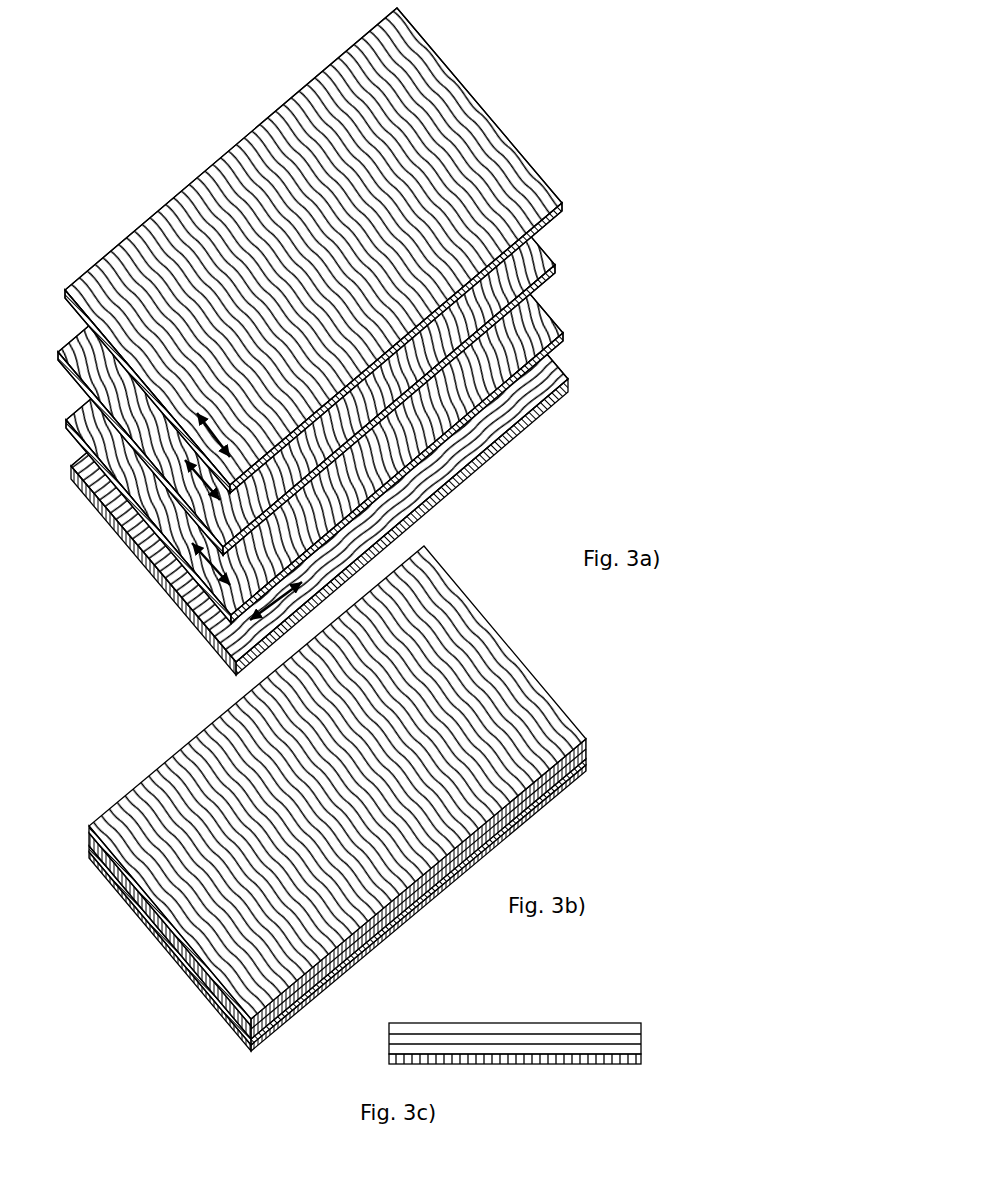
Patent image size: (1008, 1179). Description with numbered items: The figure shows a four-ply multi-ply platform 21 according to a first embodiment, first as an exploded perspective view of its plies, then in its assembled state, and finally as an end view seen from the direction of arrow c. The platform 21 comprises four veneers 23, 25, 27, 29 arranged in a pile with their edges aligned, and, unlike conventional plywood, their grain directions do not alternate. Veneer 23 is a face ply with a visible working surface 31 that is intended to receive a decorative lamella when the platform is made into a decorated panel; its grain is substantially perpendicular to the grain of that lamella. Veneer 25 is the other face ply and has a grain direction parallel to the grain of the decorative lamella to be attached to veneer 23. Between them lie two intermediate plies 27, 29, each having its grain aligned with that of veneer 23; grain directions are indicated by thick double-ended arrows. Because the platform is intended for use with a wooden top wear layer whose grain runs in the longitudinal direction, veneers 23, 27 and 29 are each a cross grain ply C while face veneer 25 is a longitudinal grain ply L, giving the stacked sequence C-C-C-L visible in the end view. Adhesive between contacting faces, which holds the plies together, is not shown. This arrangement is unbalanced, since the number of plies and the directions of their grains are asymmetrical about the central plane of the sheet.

In FIG. 3A, the multi-ply platform 21 is at (359, 341).
In FIG. 3B, the multi-ply platform 21 is at (473, 702).
In FIG. 3A, the face ply veneer 23 is at (350, 250).
In FIG. 3A, the face ply veneer 25 is at (550, 378).
In FIG. 3A, the intermediate ply 27 is at (535, 262).
In FIG. 3A, the intermediate ply 29 is at (537, 327).
In FIG. 3A, the visible working surface 31 is at (413, 72).
In FIG. 3C, the cross grain ply C is at (633, 1050).
In FIG. 3C, the longitudinal grain ply L is at (627, 1057).
In FIG. 3B, the viewing direction arrow c is at (132, 965).